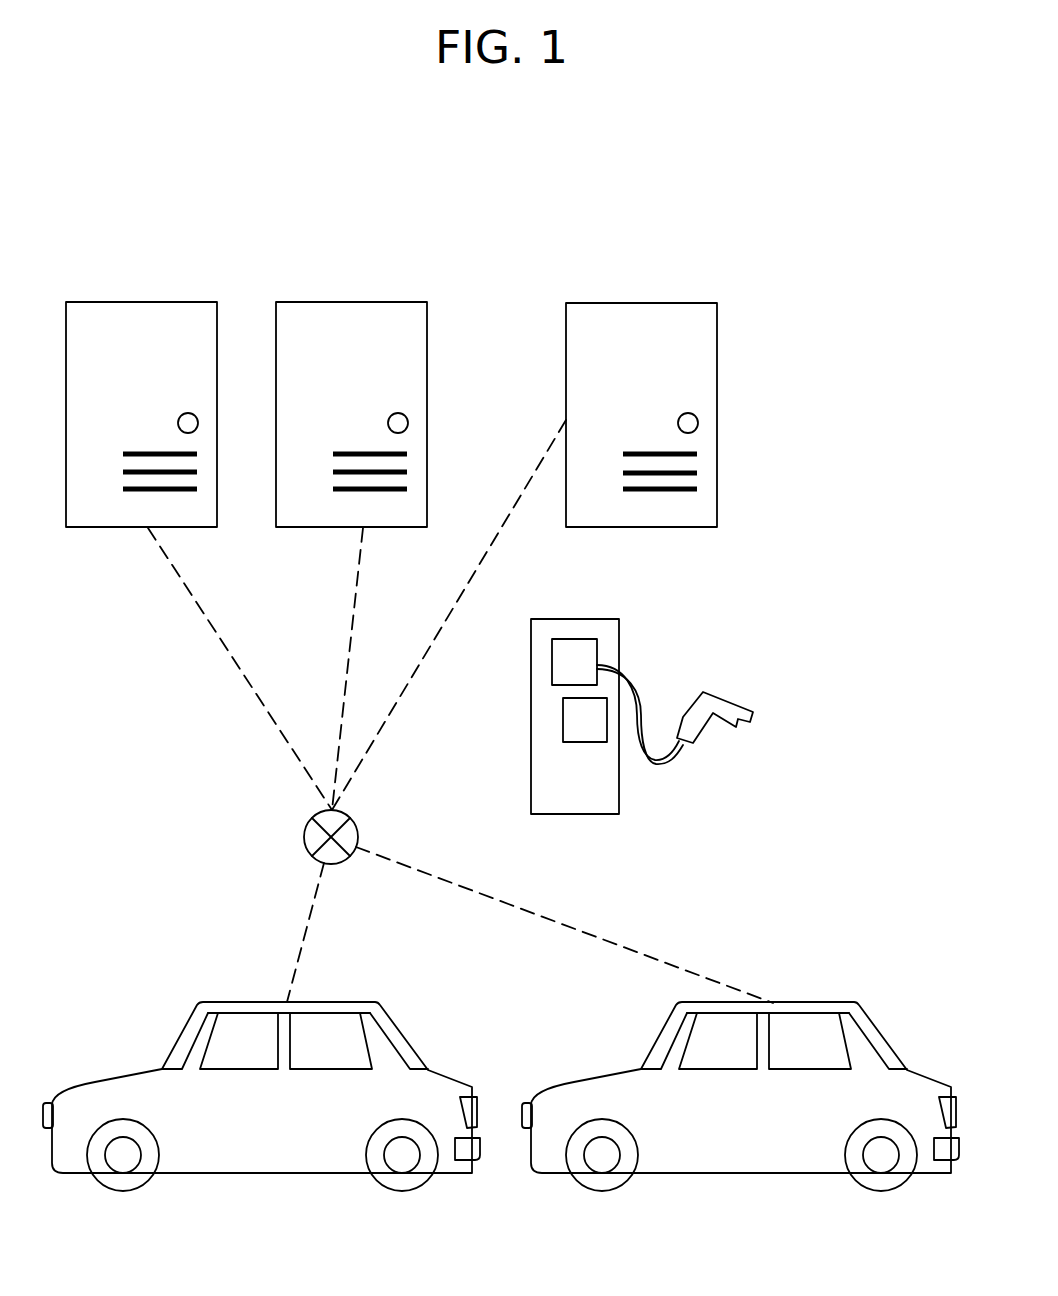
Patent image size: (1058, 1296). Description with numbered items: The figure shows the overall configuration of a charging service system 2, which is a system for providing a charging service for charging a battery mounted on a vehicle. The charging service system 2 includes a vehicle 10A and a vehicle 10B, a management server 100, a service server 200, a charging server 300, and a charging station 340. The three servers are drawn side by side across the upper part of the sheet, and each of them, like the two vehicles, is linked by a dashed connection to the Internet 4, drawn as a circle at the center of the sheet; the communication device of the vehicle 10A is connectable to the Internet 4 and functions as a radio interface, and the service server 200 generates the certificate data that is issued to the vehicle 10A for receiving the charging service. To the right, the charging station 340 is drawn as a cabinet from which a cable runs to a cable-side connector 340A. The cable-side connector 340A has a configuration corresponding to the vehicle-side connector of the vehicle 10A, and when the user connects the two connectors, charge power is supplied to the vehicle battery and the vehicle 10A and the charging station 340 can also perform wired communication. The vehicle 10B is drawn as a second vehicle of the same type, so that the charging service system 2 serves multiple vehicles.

The charging service system 2 is at (448, 179).
The management server 100 is at (132, 302).
The service server 200 is at (405, 302).
The charging server 300 is at (665, 303).
The charging station 340 is at (580, 619).
The cable-side connector 340A is at (730, 703).
The Internet 4 is at (309, 821).
The vehicle 10A is at (207, 991).
The vehicle 10B is at (825, 993).